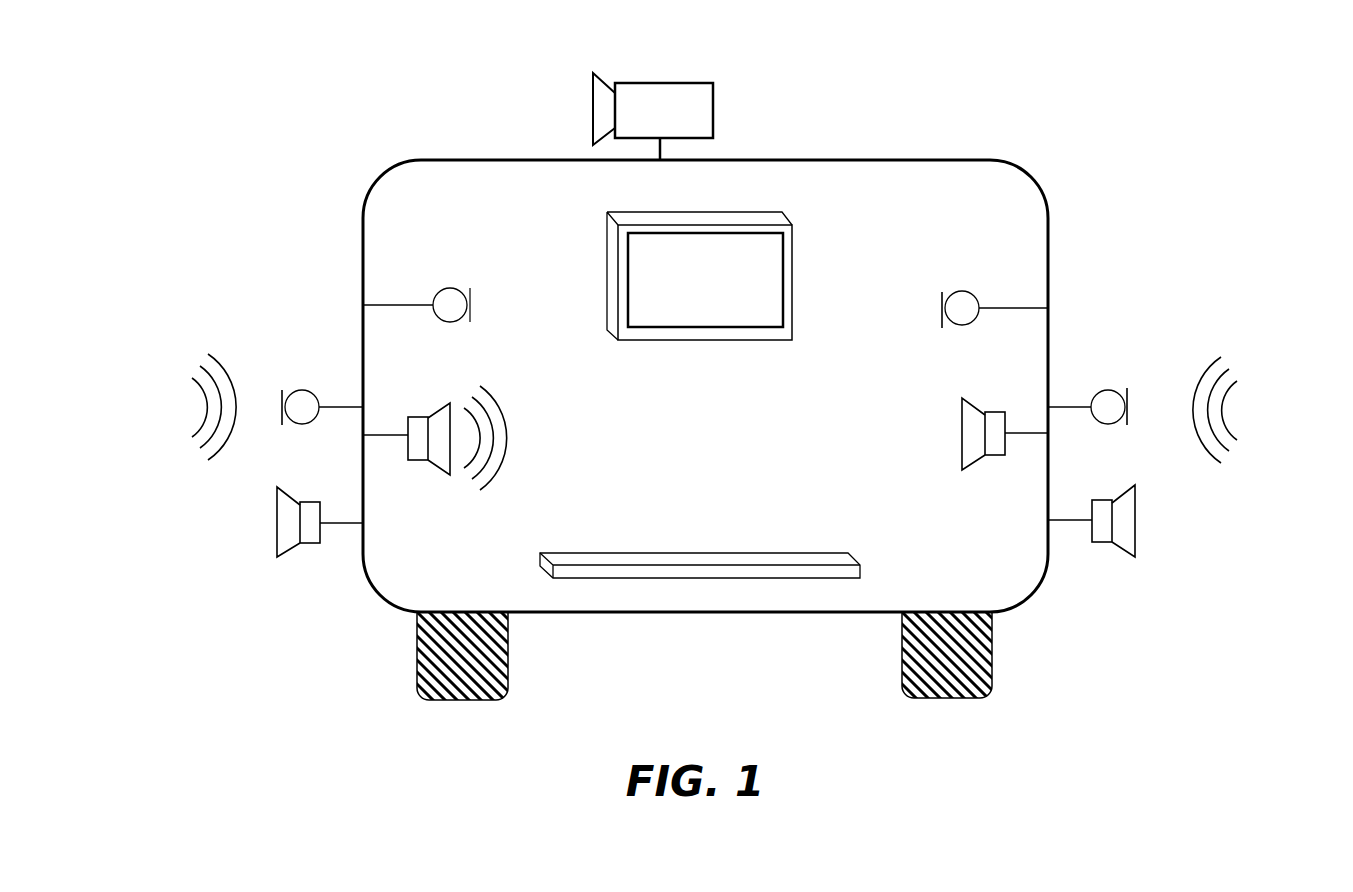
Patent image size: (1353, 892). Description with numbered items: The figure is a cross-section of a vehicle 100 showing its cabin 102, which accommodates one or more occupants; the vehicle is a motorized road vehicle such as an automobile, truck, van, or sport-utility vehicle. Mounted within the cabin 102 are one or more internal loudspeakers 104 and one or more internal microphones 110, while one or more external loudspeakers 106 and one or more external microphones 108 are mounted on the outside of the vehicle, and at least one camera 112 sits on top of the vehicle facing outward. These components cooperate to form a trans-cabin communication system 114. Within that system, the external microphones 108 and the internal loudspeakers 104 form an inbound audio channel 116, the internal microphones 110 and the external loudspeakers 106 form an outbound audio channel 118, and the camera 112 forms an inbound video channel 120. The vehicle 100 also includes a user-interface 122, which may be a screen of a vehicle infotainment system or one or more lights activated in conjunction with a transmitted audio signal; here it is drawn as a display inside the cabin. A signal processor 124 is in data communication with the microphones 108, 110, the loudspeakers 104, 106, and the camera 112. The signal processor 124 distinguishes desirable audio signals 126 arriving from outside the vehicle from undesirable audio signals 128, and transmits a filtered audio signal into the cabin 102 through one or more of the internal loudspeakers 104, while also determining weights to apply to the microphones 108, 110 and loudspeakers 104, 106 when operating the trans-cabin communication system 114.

The vehicle 100 is at (322, 142).
The cabin 102 is at (688, 394).
The internal loudspeaker 104 is at (423, 417).
The external loudspeaker 106 is at (310, 544).
The external microphone 108 is at (300, 390).
The internal microphone 110 is at (443, 288).
The camera 112 is at (678, 124).
The trans-cabin communication system 114 is at (510, 444).
The inbound audio channel 116 is at (340, 405).
The outbound audio channel 118 is at (340, 522).
The inbound video channel 120 is at (663, 160).
The user-interface 122 is at (613, 273).
The signal processor 124 is at (742, 553).
The desirable audio signal 126 is at (200, 407).
The undesirable audio signal 128 is at (1220, 413).